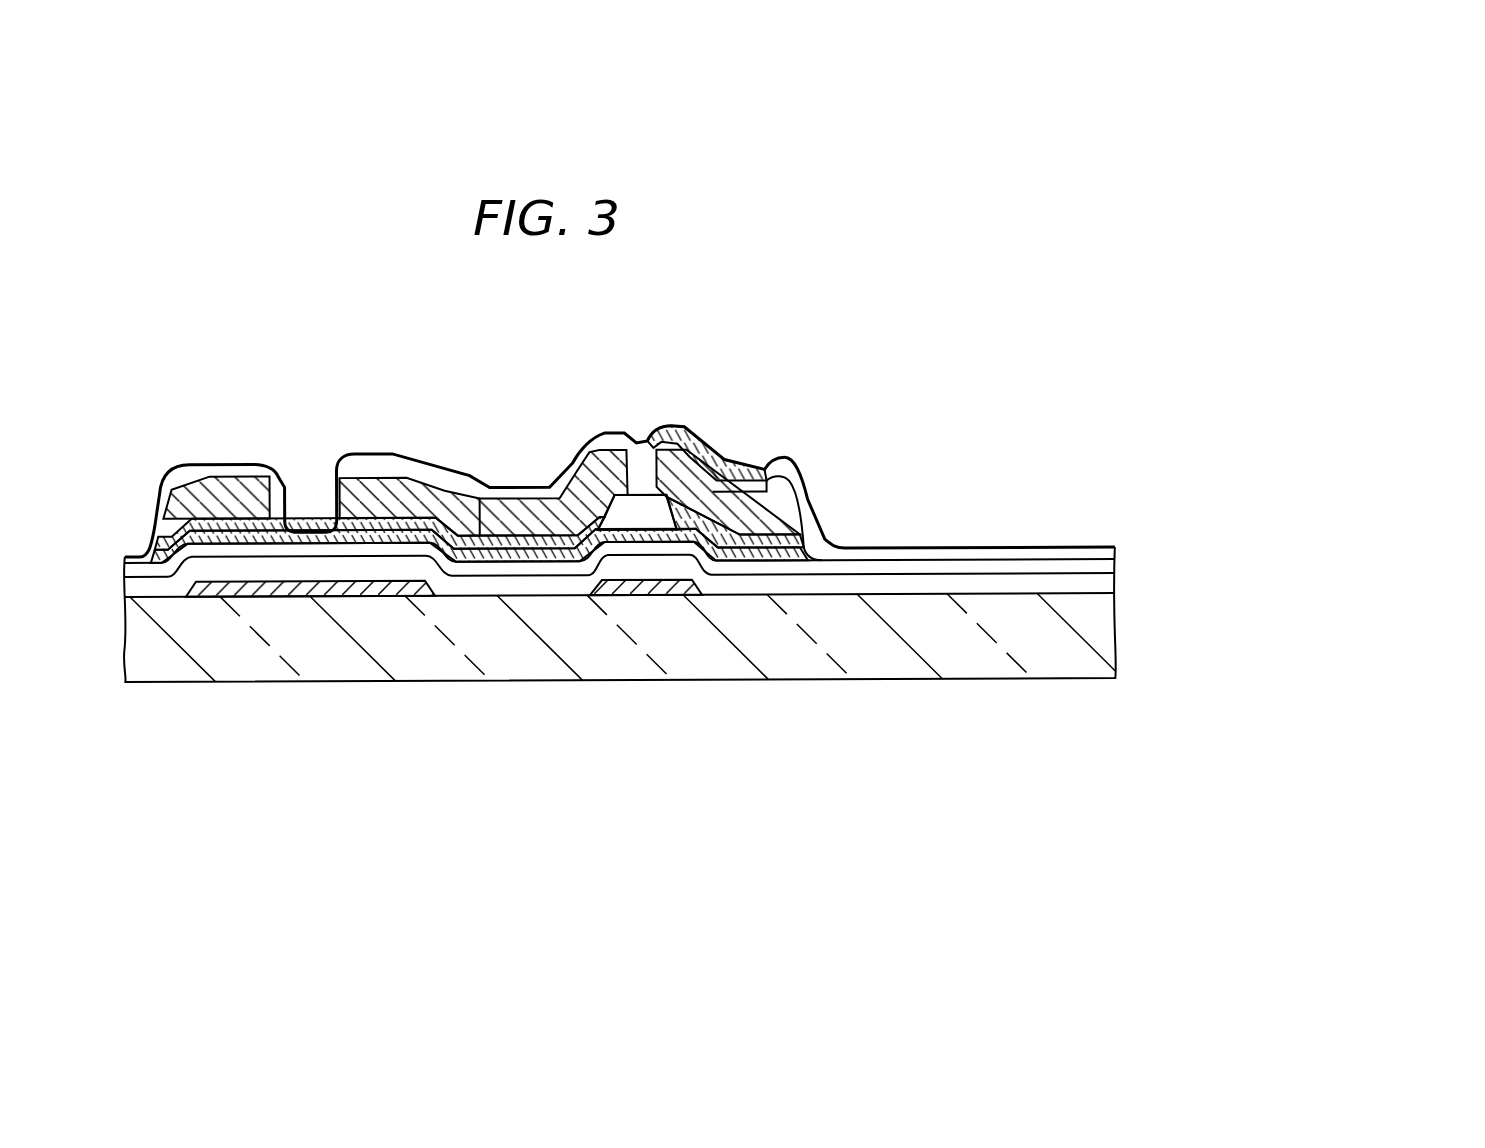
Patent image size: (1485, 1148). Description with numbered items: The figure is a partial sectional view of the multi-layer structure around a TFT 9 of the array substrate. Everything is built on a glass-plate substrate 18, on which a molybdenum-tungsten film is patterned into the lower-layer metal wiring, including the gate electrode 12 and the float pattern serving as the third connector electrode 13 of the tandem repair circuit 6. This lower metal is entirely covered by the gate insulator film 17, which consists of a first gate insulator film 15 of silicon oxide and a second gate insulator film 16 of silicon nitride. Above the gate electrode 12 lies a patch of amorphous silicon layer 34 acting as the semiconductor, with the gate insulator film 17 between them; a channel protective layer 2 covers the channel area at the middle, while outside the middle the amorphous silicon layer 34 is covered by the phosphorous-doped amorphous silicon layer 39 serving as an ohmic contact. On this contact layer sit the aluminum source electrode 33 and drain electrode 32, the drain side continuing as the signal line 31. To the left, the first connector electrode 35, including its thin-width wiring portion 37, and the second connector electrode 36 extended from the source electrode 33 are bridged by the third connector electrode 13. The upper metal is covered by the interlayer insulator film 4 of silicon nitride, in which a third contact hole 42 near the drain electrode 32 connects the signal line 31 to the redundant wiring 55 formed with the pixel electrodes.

The channel protective layer 2 is at (662, 513).
The interlayer insulator film 4 is at (648, 440).
The tandem repair circuit 6 is at (329, 428).
The TFT 9 is at (675, 551).
The gate electrode 12 is at (650, 588).
The third connector electrode 13 is at (312, 590).
The first gate insulator film 15 is at (1108, 584).
The second gate insulator film 16 is at (1108, 568).
The gate insulator film 17 is at (796, 597).
The glass-plate substrate 18 is at (1105, 650).
The signal line 31 is at (782, 520).
The drain electrode 32 is at (767, 492).
The source electrode 33 is at (608, 455).
The amorphous silicon layer 34 is at (733, 497).
The first connector electrode 35 is at (232, 490).
The second connector electrode 36 is at (409, 471).
The thin-width wiring portion 37 is at (220, 462).
The phosphorous-doped amorphous silicon layer 39 is at (757, 497).
The third contact hole 42 is at (758, 472).
The redundant wiring 55 is at (688, 432).